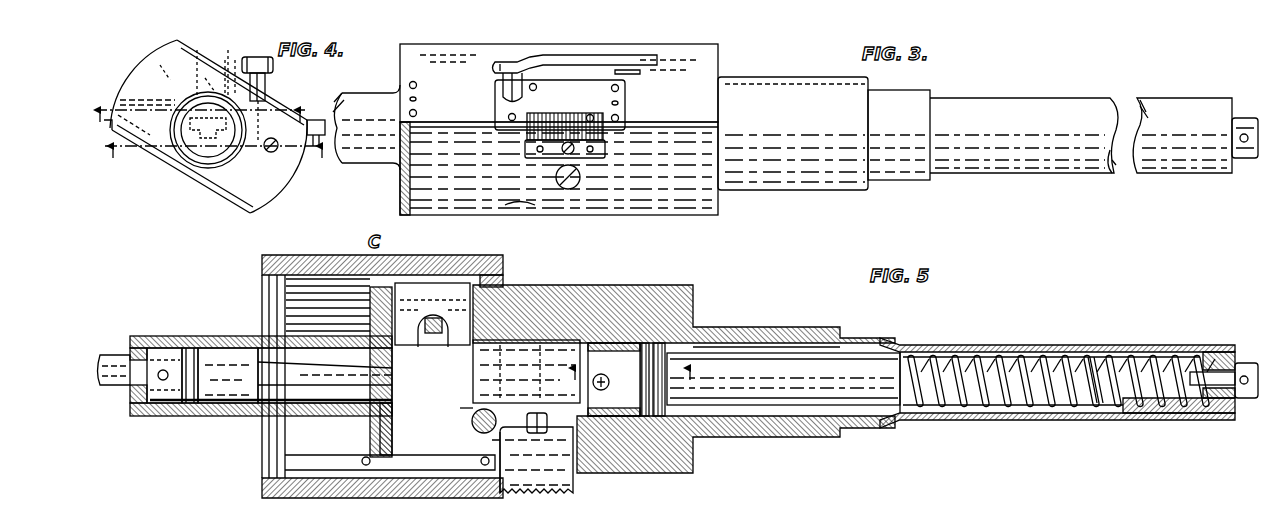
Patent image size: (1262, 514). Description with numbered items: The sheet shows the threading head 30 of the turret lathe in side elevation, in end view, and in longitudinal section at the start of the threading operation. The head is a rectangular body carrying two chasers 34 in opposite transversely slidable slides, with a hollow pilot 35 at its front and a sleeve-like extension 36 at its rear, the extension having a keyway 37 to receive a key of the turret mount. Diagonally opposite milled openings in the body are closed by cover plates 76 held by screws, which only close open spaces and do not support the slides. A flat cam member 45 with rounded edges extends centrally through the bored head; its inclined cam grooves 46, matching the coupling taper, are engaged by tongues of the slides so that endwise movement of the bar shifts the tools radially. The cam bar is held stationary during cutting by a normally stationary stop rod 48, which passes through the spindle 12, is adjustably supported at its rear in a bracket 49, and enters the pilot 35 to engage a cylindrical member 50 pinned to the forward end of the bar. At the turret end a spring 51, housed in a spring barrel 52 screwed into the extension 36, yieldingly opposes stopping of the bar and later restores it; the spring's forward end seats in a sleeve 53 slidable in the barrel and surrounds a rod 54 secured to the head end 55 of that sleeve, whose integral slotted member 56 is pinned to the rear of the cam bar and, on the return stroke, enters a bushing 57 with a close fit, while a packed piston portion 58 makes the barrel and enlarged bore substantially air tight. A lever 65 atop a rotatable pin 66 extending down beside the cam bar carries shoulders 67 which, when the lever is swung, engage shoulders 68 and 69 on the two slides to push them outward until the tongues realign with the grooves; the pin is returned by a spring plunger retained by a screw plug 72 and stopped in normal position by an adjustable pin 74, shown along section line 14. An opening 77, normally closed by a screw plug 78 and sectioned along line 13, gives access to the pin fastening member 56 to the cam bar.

In FIG. 4, the spindle 12 is at (217, 164).
In FIG. 5, the section line 13— 13 is at (633, 366).
In FIG. 4, the section line 14— 14 is at (197, 101).
In FIG. 3, the threading head 30 is at (641, 212).
In FIG. 4, the chasers 34 is at (314, 118).
In FIG. 3, the chasers 34 is at (605, 132).
In FIG. 5, the chasers 34 is at (420, 260).
In FIG. 4, the hollow pilot 35 is at (213, 158).
In FIG. 3, the hollow pilot 35 is at (376, 160).
In FIG. 5, the hollow pilot 35 is at (222, 416).
In FIG. 3, the sleeve-like extension 36 is at (789, 190).
In FIG. 5, the sleeve-like extension 36 is at (766, 437).
In FIG. 3, the keyway 37 is at (776, 82).
In FIG. 5, the cam member 45 is at (318, 406).
In FIG. 5, the cam grooves 46 is at (290, 406).
In FIG. 5, the stop rod 48 is at (115, 362).
In FIG. 5, the bracket 49 is at (216, 346).
In FIG. 5, the cylindrical member 50 is at (165, 346).
In FIG. 5, the spring 51 is at (990, 358).
In FIG. 3, the spring barrel 52 is at (1042, 160).
In FIG. 5, the spring barrel 52 is at (1112, 352).
In FIG. 5, the sleeve 53 is at (783, 379).
In FIG. 5, the rod 54 is at (1066, 358).
In FIG. 5, the head end of sleeve 55 is at (640, 418).
In FIG. 5, the cylindrical member extension 56 is at (608, 342).
In FIG. 5, the bushing 57 is at (690, 312).
In FIG. 5, the piston portion 58 is at (658, 418).
In FIG. 4, the lever 65 is at (274, 66).
In FIG. 3, the lever 65 is at (657, 62).
In FIG. 4, the rotatable pin 66 is at (268, 86).
In FIG. 3, the rotatable pin 66 is at (503, 88).
In FIG. 5, the rotatable pin 66 is at (480, 432).
In FIG. 5, the shoulders 67 is at (472, 425).
In FIG. 5, the shoulder 68 is at (512, 486).
In FIG. 5, the shoulder 69 is at (460, 416).
In FIG. 4, the screw plug 72 is at (280, 150).
In FIG. 4, the adjustable pin 74 is at (125, 95).
In FIG. 4, the cover plates 76 is at (265, 112).
In FIG. 3, the cover plates 76 is at (455, 112).
In FIG. 4, the opening 77 is at (203, 60).
In FIG. 3, the opening 77 is at (600, 68).
In FIG. 4, the screw plug 78 is at (226, 60).
In FIG. 3, the screw plug 78 is at (636, 72).